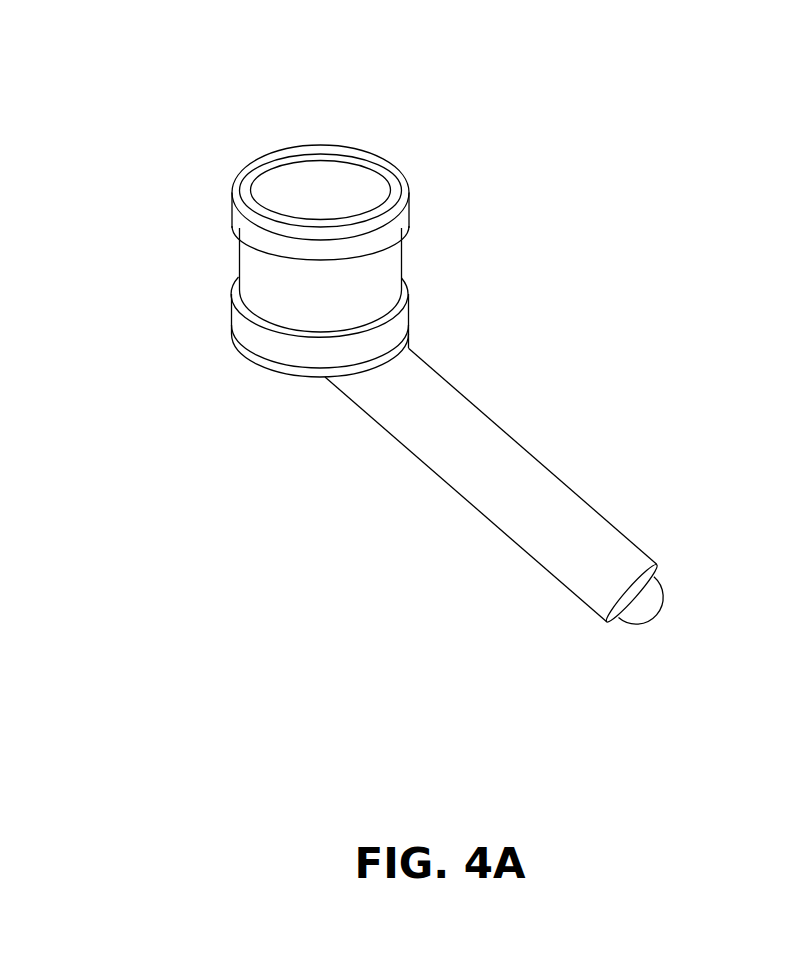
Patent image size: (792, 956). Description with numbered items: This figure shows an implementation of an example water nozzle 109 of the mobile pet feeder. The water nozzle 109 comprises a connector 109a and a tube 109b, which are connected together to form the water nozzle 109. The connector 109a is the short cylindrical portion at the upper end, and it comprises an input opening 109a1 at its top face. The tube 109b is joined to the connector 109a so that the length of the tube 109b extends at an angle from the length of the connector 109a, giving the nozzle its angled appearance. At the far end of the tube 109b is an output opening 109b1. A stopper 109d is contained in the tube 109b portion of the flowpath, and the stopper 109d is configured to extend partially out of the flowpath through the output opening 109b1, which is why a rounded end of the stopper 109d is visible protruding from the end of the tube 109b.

The water nozzle 109 is at (447, 347).
The connector 109a is at (329, 238).
The input opening 109a1 is at (234, 134).
The tube 109b is at (547, 511).
The output opening 109b1 is at (586, 641).
The stopper 109d is at (680, 629).